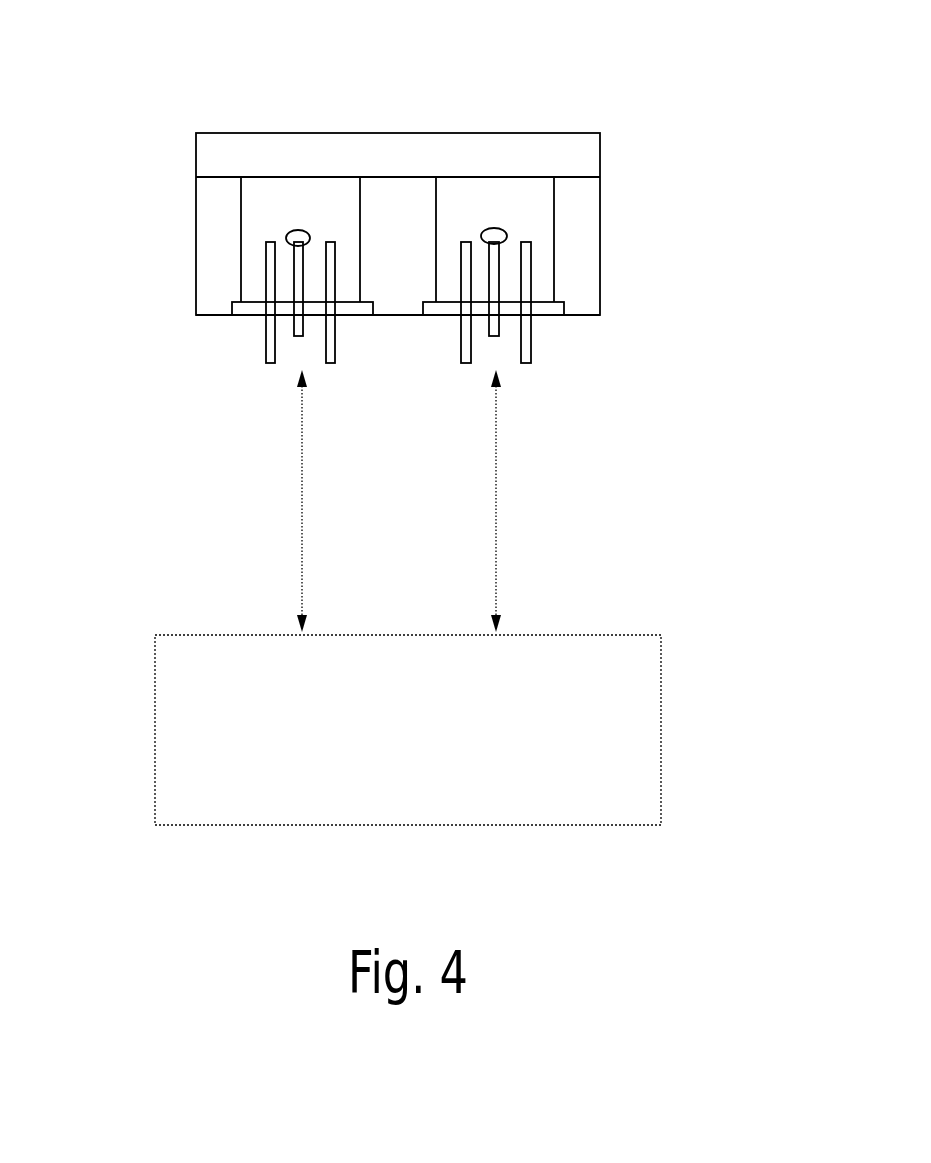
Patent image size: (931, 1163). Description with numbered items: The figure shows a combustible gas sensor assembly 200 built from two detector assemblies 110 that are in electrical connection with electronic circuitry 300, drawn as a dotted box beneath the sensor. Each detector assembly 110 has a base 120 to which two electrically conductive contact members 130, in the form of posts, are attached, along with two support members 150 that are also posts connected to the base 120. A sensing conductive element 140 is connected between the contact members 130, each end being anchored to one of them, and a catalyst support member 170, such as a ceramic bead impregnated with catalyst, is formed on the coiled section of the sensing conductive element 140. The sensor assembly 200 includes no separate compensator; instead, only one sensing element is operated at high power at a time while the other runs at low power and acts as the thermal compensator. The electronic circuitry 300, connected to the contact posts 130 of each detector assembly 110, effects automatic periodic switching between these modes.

The sensor assembly 200 is at (620, 115).
The detector assembly 110 is at (325, 215).
The base 120 is at (230, 305).
The contact members 130 is at (323, 264).
The sensing conductive element 140 is at (282, 238).
The support members 150 is at (293, 282).
The catalyst support member 170 is at (298, 230).
The electronic circuitry 300 is at (412, 741).